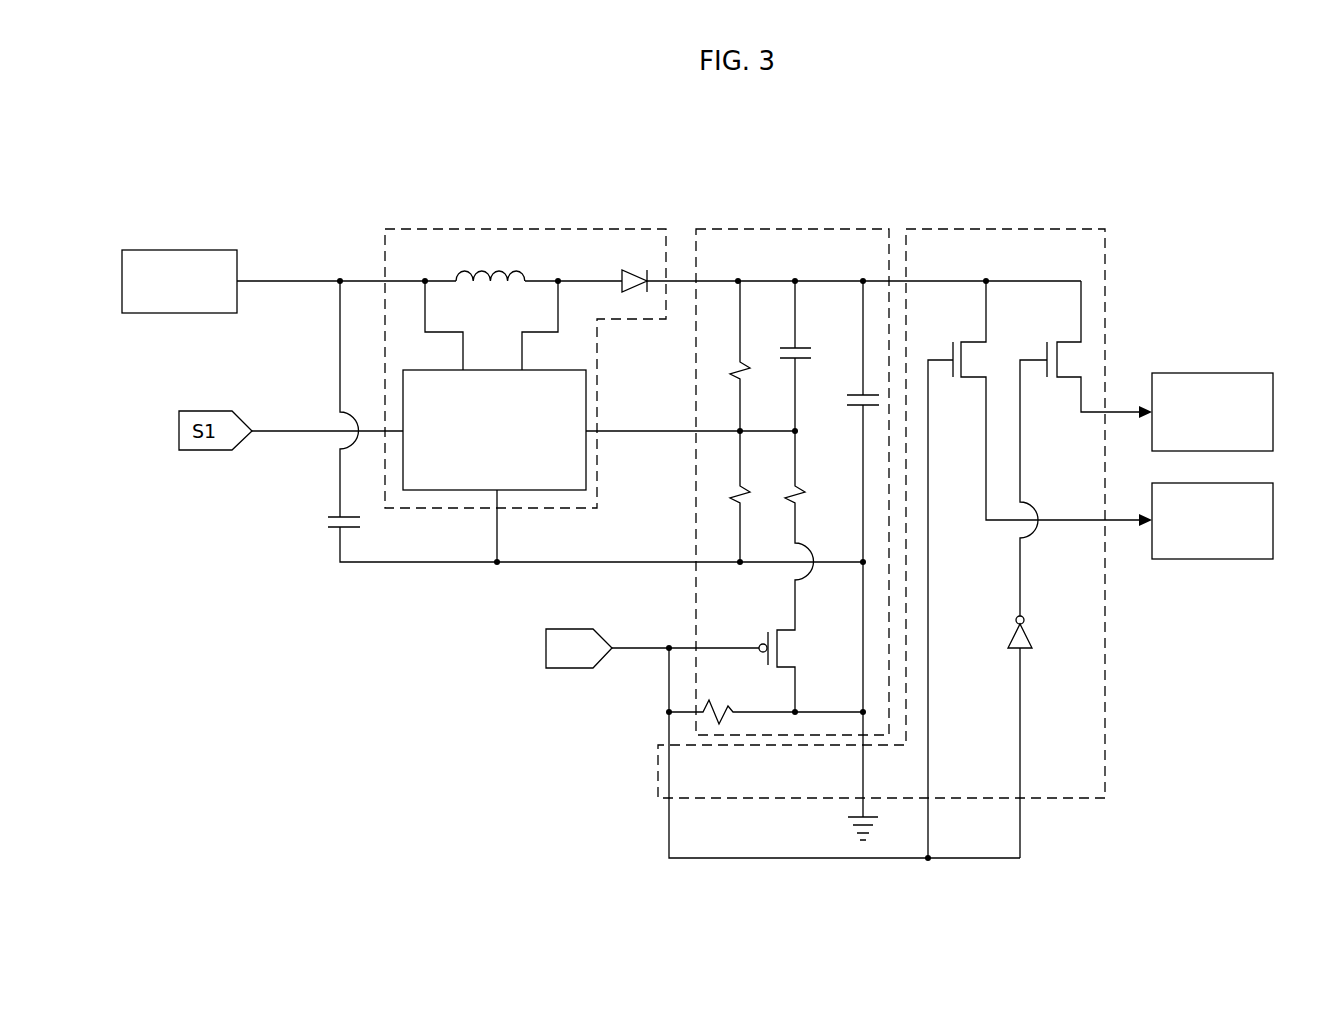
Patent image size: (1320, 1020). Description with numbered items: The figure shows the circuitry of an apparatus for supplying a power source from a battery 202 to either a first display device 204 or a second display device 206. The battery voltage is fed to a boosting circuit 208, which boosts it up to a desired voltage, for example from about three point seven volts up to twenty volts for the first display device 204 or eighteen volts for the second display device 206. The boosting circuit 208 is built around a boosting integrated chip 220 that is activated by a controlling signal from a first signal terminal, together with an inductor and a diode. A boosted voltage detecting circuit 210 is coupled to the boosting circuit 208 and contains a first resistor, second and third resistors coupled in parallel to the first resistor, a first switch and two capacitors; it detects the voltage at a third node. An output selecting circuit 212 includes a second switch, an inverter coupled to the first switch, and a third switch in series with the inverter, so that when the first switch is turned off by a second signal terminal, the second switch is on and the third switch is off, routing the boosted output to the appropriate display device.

The battery 202 is at (183, 250).
The first display device 204 is at (1200, 373).
The second display device 206 is at (1225, 559).
The boosting circuit 208 is at (465, 229).
The boosted voltage detecting circuit 210 is at (850, 229).
The output selecting circuit 212 is at (1078, 229).
The boosting integrated chip 220 is at (437, 490).